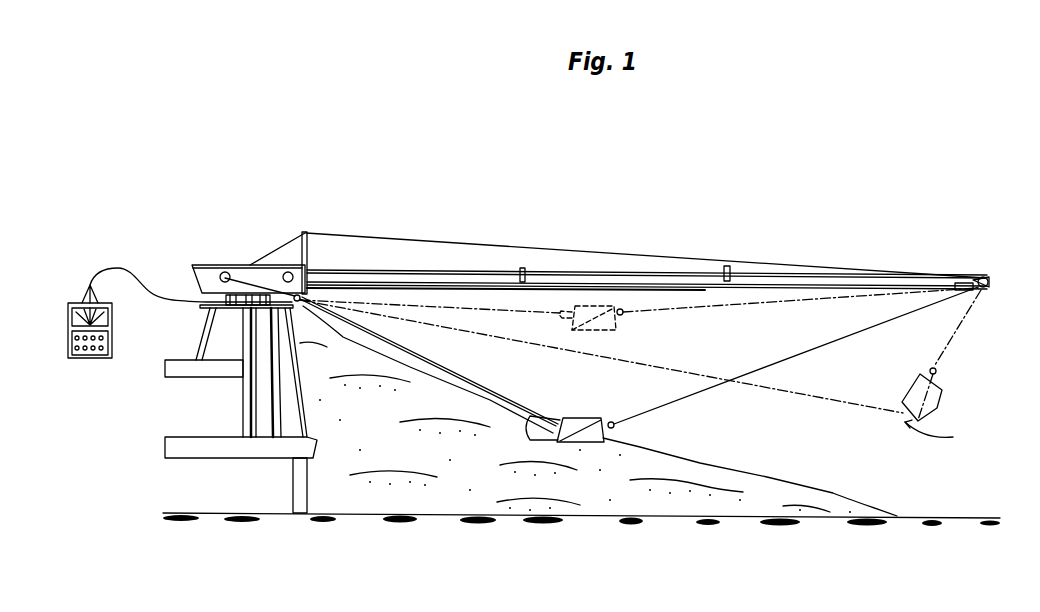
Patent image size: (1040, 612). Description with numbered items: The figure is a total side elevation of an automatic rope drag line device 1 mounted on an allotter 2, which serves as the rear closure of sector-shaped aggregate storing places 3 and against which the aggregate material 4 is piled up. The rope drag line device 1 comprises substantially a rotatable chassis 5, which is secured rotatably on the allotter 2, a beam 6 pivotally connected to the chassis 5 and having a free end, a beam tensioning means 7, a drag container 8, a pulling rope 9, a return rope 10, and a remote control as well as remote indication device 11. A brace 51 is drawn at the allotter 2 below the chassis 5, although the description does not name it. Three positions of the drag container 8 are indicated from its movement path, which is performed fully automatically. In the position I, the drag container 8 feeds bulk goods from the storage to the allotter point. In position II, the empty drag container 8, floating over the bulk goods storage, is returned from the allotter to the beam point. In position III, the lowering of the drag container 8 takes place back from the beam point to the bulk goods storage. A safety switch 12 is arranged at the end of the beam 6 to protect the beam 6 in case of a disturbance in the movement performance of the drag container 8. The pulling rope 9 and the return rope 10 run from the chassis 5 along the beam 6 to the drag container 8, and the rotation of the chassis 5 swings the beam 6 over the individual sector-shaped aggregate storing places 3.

The automatic rope drag line device 1 is at (405, 213).
The allotter 2 is at (256, 402).
The sector-shaped aggregate storing places 3 is at (518, 517).
The aggregate material 4 is at (382, 488).
The rotatable chassis 5 is at (208, 273).
The brace strut 51 is at (212, 338).
The beam 6 is at (893, 283).
The beam tensioning means 7 is at (306, 234).
The drag container 8 is at (608, 429).
The pulling rope 9 is at (415, 350).
The return rope 10 is at (600, 282).
The remote control and remote indication device 11 is at (83, 350).
The safety switch 12 is at (963, 284).
The position I is at (580, 423).
The position II is at (613, 320).
The position III is at (941, 402).